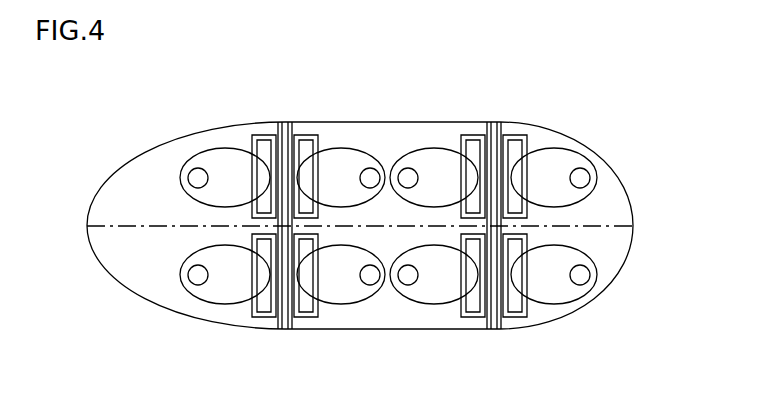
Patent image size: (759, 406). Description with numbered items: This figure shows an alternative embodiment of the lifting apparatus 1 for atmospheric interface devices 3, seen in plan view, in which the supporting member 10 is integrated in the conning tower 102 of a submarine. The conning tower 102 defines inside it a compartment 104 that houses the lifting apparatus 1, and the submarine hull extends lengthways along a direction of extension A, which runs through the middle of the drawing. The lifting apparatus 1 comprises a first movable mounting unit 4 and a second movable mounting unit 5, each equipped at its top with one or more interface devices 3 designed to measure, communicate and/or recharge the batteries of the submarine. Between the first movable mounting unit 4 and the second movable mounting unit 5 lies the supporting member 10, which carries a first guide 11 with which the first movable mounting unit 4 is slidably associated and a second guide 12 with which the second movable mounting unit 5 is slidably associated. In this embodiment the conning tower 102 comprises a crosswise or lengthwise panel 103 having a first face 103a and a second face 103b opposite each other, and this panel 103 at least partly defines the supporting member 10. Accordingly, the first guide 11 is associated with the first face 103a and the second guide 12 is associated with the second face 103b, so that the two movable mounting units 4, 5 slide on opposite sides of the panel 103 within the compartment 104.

The lifting apparatus 1 is at (298, 128).
The atmospheric interface device 3 is at (188, 178).
The first movable mounting unit 4 is at (342, 187).
The second movable mounting unit 5 is at (239, 187).
The supporting member 10 is at (283, 126).
The first guide 11 is at (302, 135).
The second guide 12 is at (257, 134).
The conning tower 102 is at (171, 144).
The panel 103 is at (285, 331).
The first face 103a is at (292, 323).
The second face 103b is at (278, 324).
The compartment 104 is at (135, 182).
The direction of extension A is at (620, 224).